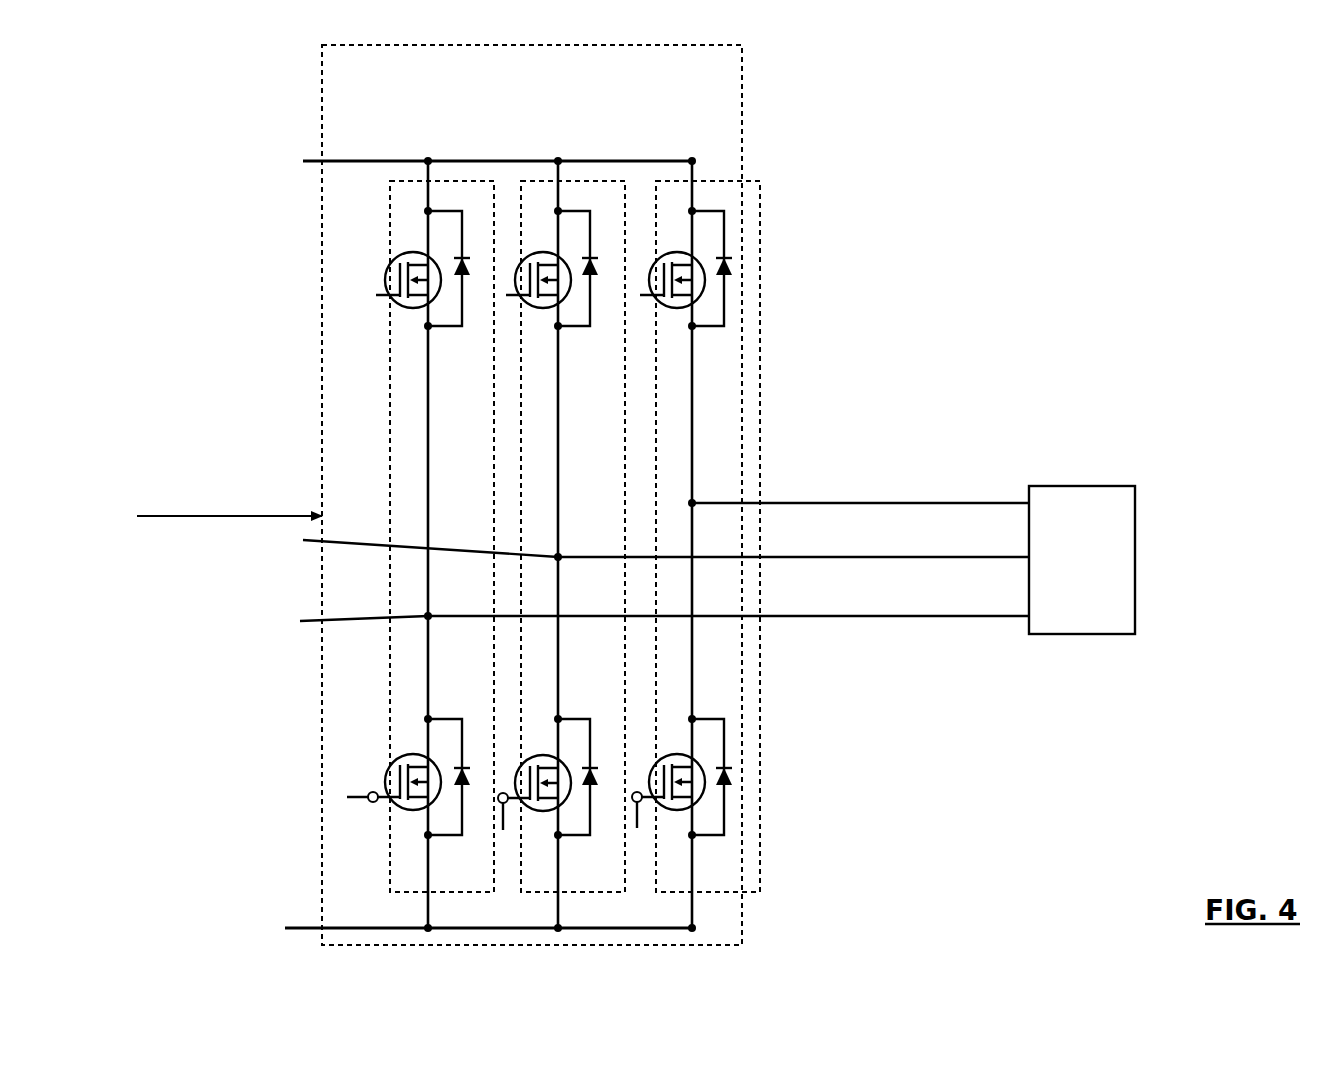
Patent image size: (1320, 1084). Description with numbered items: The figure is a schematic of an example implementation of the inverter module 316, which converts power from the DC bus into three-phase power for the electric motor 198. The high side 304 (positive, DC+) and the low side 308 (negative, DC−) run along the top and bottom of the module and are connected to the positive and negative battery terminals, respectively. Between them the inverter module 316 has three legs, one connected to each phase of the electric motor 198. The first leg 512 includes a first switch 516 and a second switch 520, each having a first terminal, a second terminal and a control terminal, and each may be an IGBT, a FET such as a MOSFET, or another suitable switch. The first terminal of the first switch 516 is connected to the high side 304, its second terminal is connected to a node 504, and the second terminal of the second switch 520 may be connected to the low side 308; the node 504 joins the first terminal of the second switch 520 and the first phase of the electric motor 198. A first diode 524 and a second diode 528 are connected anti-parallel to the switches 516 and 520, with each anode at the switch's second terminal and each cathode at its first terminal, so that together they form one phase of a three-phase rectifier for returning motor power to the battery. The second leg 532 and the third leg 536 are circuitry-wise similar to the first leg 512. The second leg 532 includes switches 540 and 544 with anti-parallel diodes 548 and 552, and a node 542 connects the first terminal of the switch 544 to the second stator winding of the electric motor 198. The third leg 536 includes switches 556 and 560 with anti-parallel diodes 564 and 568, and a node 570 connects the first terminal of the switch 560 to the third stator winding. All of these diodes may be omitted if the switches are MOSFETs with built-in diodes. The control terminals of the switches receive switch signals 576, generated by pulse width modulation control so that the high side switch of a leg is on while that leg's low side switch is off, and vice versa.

The electric motor 198 is at (1082, 634).
The high side 304 is at (303, 161).
The low side 308 is at (300, 926).
The inverter module 316 is at (742, 68).
The node 504 is at (300, 621).
The first leg 512 is at (443, 181).
The first switch 516 is at (401, 248).
The second switch 520 is at (403, 745).
The first diode 524 is at (468, 249).
The second diode 528 is at (471, 745).
The second leg 532 is at (572, 181).
The third leg 536 is at (718, 181).
The switch 540 is at (542, 249).
The node 542 is at (303, 540).
The switch 544 is at (542, 745).
The anti-parallel diode 548 is at (598, 249).
The anti-parallel diode 552 is at (600, 752).
The switch 556 is at (677, 250).
The switch 560 is at (682, 743).
The anti-parallel diode 564 is at (737, 268).
The anti-parallel diode 568 is at (735, 777).
The node 570 is at (692, 504).
The switch signals 576 is at (226, 515).